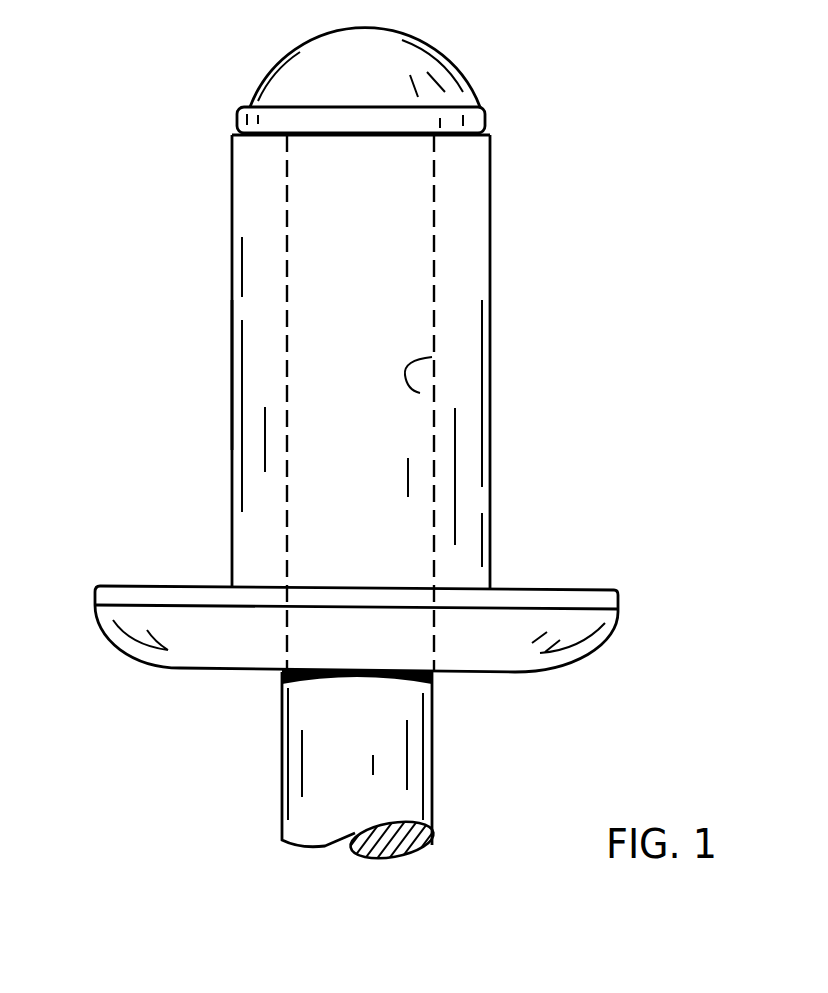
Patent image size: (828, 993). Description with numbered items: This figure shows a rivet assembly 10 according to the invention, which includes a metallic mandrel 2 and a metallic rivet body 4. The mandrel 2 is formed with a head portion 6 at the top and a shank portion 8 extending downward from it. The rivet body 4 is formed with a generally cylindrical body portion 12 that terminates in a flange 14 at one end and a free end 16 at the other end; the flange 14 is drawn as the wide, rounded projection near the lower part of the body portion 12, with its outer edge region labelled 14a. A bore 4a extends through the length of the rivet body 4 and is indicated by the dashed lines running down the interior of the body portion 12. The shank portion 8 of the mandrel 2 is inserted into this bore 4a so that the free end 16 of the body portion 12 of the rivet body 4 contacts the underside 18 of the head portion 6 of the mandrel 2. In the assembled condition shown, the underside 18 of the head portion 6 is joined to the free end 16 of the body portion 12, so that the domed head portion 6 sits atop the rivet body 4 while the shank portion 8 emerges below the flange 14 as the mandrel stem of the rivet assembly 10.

The mandrel 2 is at (392, 349).
The rivet body 4 is at (531, 503).
The bore 4a is at (430, 390).
The head portion 6 is at (305, 83).
The shank portion 8 is at (285, 375).
The rivet assembly 10 is at (148, 739).
The body portion 12 is at (490, 283).
The flange 14 is at (420, 617).
The flange edge 14a is at (578, 627).
The free end 16 is at (280, 127).
The underside 18 is at (327, 137).